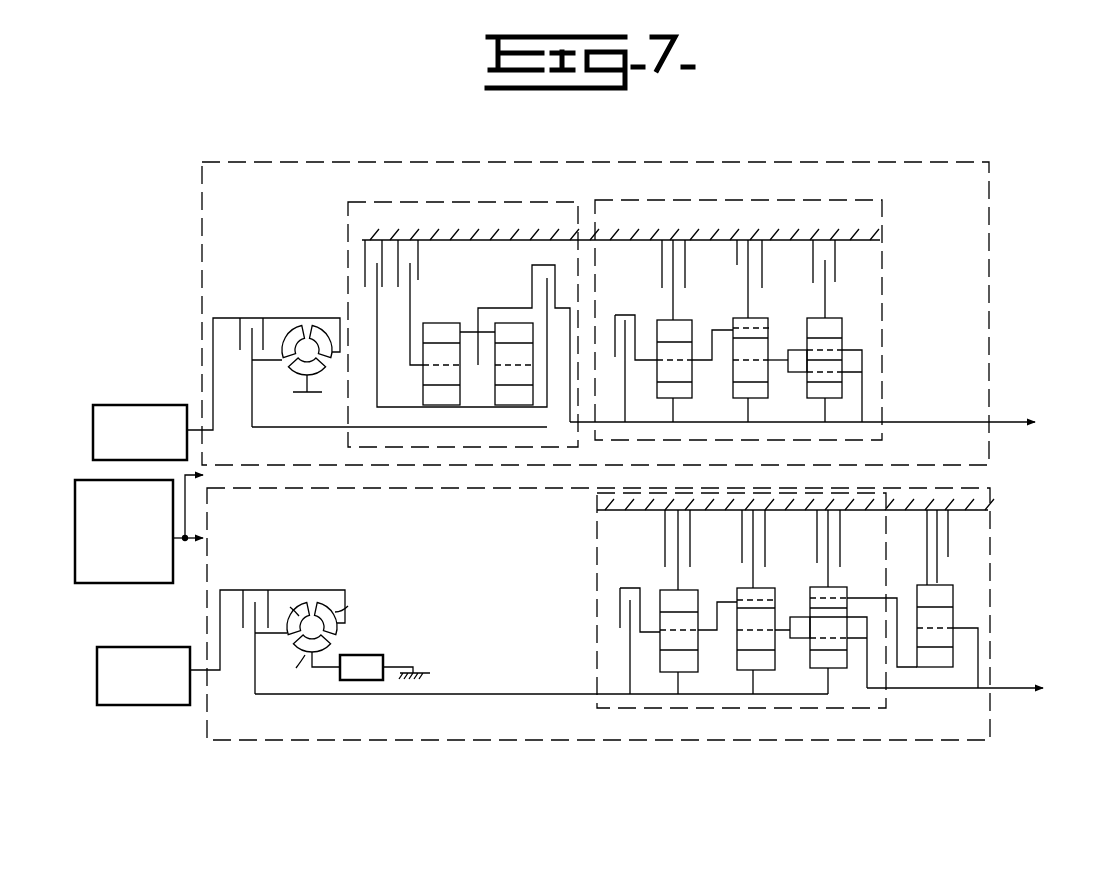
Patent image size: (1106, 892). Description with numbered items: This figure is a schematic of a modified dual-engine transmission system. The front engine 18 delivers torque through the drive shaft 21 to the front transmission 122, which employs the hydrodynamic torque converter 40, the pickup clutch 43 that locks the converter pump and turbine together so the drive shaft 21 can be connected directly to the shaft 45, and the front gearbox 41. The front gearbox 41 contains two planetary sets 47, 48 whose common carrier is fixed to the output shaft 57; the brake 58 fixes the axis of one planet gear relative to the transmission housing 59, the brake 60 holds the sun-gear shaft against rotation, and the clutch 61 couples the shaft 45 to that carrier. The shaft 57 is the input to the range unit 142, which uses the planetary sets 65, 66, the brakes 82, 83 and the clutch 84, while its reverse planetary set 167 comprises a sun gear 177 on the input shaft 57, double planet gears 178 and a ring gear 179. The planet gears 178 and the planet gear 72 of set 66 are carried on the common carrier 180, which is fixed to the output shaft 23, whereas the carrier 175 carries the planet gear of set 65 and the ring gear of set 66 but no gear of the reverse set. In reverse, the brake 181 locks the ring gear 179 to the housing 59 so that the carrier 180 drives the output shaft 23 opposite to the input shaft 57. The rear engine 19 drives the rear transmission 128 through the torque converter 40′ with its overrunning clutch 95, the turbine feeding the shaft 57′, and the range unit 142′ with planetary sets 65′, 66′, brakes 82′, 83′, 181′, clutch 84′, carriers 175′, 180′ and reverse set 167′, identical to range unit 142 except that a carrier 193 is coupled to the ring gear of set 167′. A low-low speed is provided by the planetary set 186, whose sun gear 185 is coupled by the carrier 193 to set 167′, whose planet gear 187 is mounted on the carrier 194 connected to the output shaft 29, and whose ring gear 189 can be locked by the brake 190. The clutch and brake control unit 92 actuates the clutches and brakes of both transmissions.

The front transmission 122 is at (380, 158).
The front gearbox 41 is at (458, 200).
The range unit 142 is at (735, 197).
The rear transmission 128 is at (203, 722).
The range unit 142′ is at (590, 553).
The front engine 18 is at (110, 405).
The rear engine 19 is at (150, 647).
The clutch and brake control unit 92 is at (150, 590).
The drive shaft 21 is at (213, 343).
The pickup clutch 43 is at (235, 325).
The hydrodynamic torque converter 40 is at (312, 328).
The torque converter 40′ is at (325, 607).
The shaft 45 is at (282, 430).
The brake 60 is at (377, 263).
The brake 58 is at (420, 258).
The clutch 61 is at (538, 264).
The planetary set 47 is at (450, 290).
The planetary set 48 is at (515, 321).
The output shaft 57 is at (610, 426).
The clutch 84 is at (618, 315).
The brake 83 is at (685, 266).
The brake 82 is at (763, 266).
The brake 181 is at (836, 258).
The planetary set 65 is at (676, 318).
The planetary set 66 is at (752, 316).
The reverse planetary set 167 is at (832, 316).
The double planet gears 178 is at (864, 373).
The ring gear 179 is at (844, 326).
The common carrier 180 is at (863, 400).
The output shaft 23 is at (955, 424).
The planet gear 72 is at (733, 368).
The carrier 175 is at (640, 370).
The sun gear 177 is at (807, 388).
The overrunning clutch 95 is at (372, 655).
The transmission shaft 57′ is at (516, 697).
The transmission housing 59 is at (615, 512).
The clutch 84′ is at (628, 572).
The brake 83′ is at (690, 534).
The brake 82′ is at (767, 534).
The brake 181′ is at (840, 542).
The brake 190 is at (948, 530).
The planetary set 65′ is at (680, 589).
The planetary set 66′ is at (756, 587).
The reverse planetary set 167′ is at (830, 586).
The carrier 175′ is at (655, 632).
The carrier 193 is at (898, 600).
The planetary set 186 is at (948, 583).
The ring gear 189 is at (953, 595).
The planet gear 187 is at (952, 617).
The carrier 194 is at (978, 653).
The common carrier 180′ is at (873, 668).
The sun gear 185 is at (957, 662).
The output shaft 29 is at (935, 690).